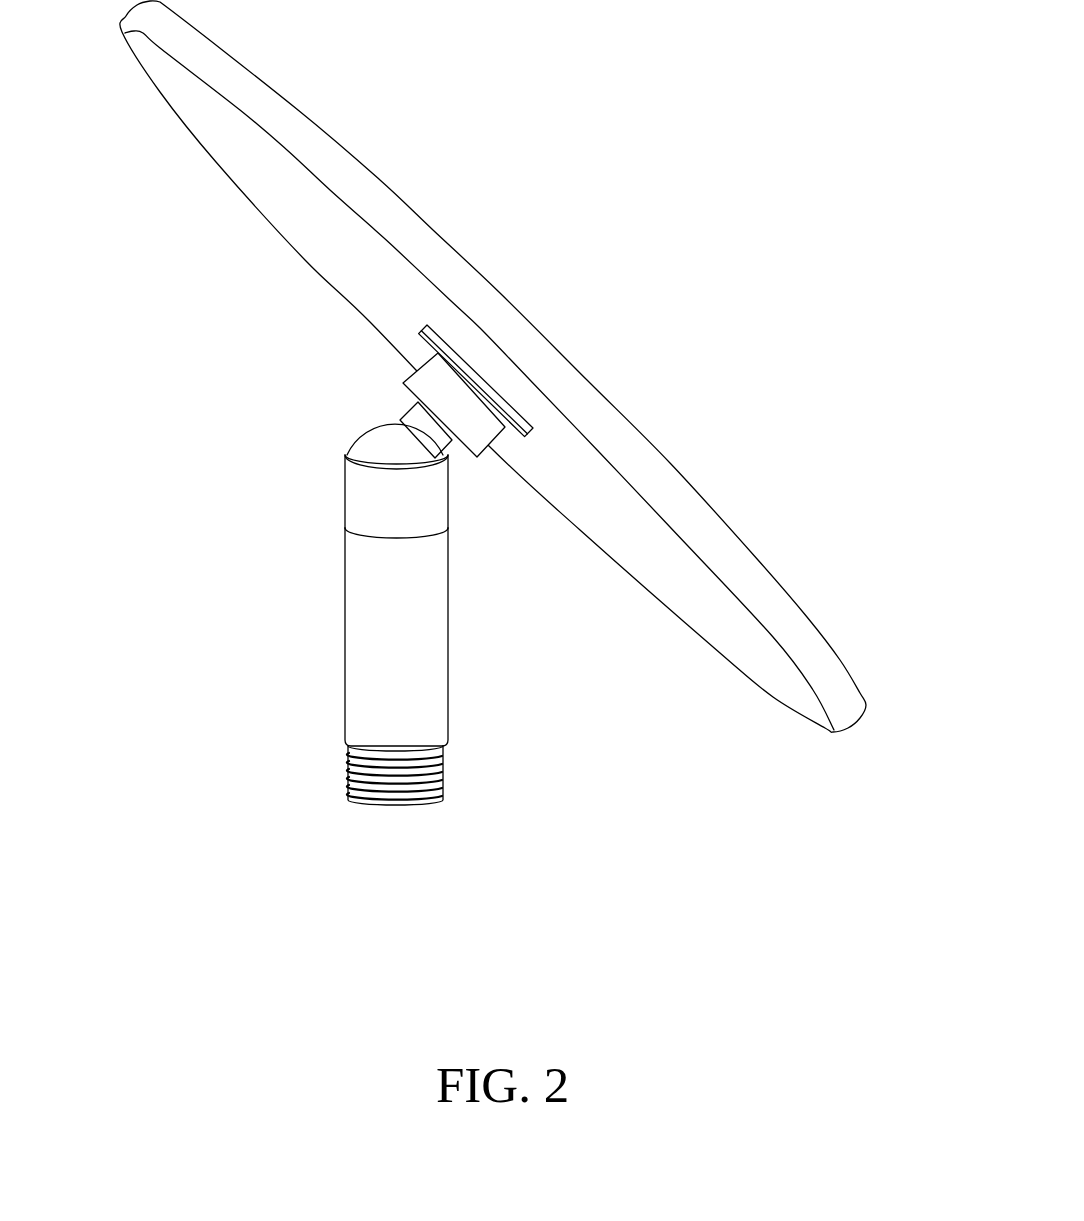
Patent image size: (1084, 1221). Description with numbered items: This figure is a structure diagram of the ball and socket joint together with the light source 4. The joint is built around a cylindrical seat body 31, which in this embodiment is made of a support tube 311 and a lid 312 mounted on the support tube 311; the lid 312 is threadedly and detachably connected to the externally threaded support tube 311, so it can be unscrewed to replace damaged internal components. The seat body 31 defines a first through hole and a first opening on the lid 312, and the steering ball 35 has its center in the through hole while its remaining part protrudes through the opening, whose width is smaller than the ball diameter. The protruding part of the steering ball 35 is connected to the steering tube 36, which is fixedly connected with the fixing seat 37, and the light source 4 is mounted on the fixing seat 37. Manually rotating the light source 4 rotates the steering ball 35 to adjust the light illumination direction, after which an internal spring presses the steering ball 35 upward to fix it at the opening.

The light source 4 is at (583, 295).
The fixing seat 37 is at (428, 377).
The steering tube 36 is at (408, 413).
The steering ball 35 is at (382, 442).
The seat body 31 is at (262, 630).
The lid 312 is at (367, 508).
The support tube 311 is at (365, 603).